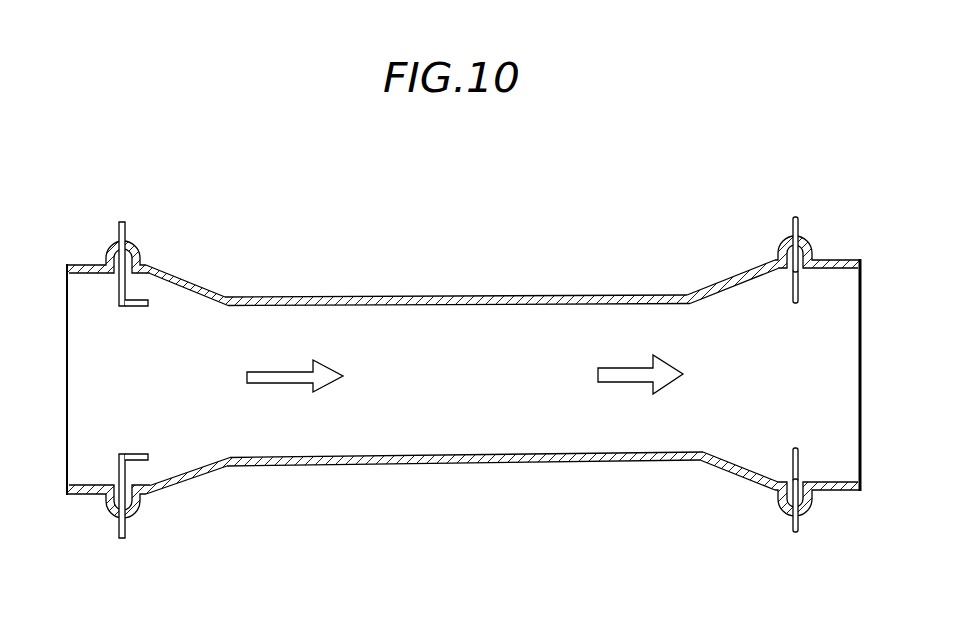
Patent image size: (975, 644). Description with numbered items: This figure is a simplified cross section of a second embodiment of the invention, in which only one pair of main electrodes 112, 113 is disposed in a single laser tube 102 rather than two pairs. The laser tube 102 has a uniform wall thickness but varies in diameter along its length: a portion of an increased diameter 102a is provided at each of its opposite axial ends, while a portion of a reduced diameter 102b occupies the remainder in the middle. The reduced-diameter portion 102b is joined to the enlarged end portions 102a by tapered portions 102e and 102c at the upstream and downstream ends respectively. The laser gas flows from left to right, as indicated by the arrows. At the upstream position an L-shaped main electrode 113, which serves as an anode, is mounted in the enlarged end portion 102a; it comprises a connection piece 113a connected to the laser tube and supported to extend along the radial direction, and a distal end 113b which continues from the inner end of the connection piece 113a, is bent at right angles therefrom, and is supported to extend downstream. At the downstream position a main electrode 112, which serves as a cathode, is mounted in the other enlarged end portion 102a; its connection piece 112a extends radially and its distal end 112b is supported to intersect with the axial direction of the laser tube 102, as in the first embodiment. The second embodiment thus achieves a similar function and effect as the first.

The laser tube 102 is at (455, 353).
The portion of an increased diameter 102a is at (92, 262).
The portion of a reduced diameter 102b is at (500, 297).
The tapered portion 102c is at (718, 283).
The tapered portion 102e is at (188, 279).
The main electrode 112 is at (802, 384).
The connection piece 112a is at (799, 275).
The distal end 112b is at (794, 305).
The L-shaped main electrode 113 is at (143, 376).
The connection piece 113a is at (119, 280).
The distal end 113b is at (138, 307).